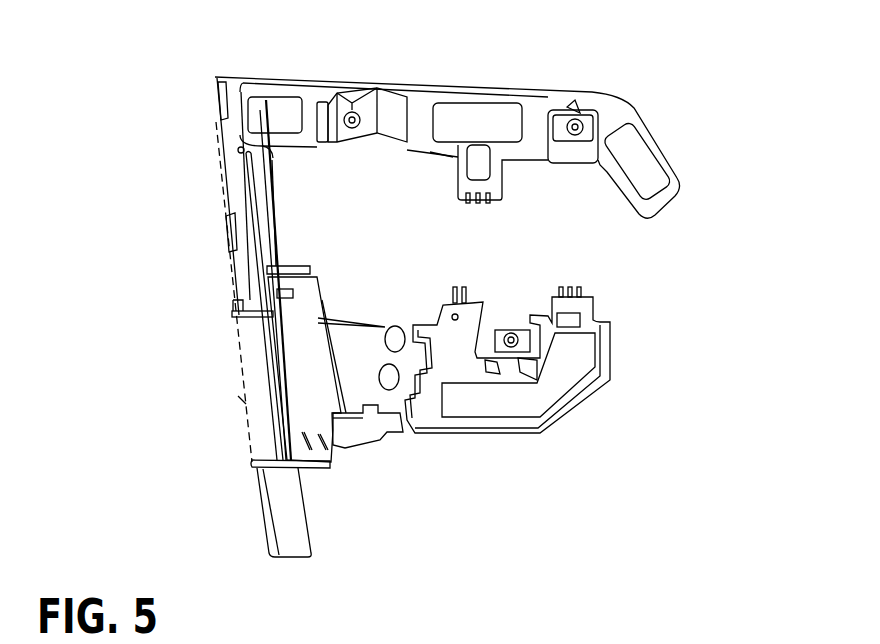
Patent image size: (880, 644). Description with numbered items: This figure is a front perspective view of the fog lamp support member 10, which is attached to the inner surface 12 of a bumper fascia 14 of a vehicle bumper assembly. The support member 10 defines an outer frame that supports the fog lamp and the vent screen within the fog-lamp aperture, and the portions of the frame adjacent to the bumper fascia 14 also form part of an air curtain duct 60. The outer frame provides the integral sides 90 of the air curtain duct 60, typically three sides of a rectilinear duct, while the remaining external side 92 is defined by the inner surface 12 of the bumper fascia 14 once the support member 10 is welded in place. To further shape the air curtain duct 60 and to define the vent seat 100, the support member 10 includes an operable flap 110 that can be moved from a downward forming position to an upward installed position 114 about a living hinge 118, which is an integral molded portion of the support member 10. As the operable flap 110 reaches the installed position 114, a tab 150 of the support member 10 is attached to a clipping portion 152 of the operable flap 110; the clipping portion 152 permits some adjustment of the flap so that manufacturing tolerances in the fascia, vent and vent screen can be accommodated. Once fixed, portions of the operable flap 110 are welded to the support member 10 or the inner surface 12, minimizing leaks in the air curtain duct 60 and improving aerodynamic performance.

The support member 10 is at (388, 66).
The inner surface 12 is at (212, 130).
The bumper fascia 14 is at (208, 181).
The air curtain duct 60 is at (250, 328).
The integral sides 90 is at (260, 373).
The external side 92 is at (243, 400).
The vent seat 100 is at (400, 323).
The operable flap 110 is at (320, 362).
The installed position 114 is at (348, 379).
The living hinge 118 is at (331, 464).
The tab 150 is at (287, 292).
The clipping portion 152 is at (276, 293).